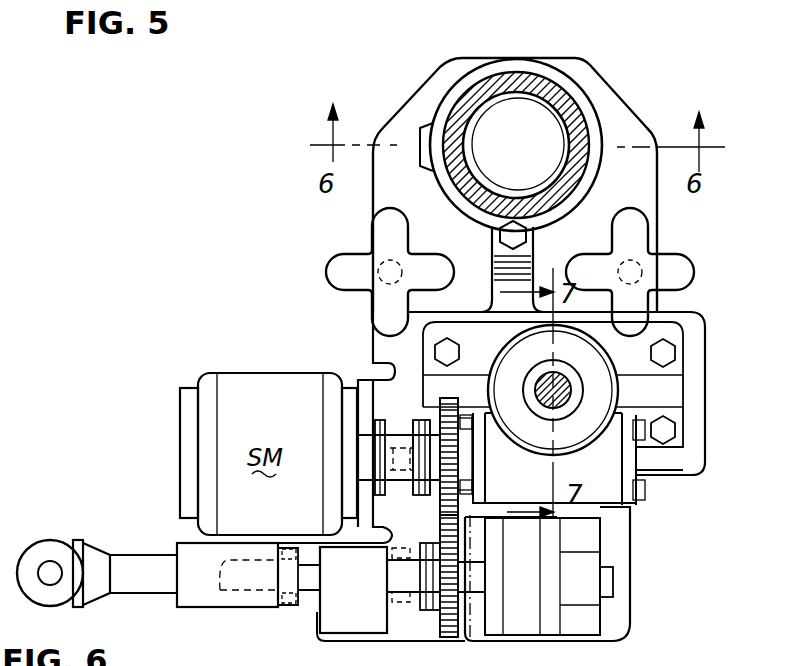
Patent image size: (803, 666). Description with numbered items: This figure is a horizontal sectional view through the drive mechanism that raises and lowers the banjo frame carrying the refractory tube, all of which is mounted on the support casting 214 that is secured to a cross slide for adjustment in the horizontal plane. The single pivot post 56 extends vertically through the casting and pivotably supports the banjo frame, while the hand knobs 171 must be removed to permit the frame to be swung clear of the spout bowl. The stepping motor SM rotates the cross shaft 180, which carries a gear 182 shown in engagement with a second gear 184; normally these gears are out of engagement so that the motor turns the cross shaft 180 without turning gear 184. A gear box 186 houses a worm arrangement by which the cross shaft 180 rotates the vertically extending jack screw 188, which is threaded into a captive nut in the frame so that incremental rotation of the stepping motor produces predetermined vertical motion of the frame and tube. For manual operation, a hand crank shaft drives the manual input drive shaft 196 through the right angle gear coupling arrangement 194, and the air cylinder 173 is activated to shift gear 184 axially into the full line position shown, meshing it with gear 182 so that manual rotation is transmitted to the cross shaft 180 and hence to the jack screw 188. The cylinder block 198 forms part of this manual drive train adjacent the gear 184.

The pivot post 56 is at (476, 100).
The support casting 214 is at (647, 64).
The hand knobs 171 is at (634, 240).
The cross shaft 180 is at (666, 462).
The gear 182 is at (438, 393).
The second gear 184 is at (448, 638).
The gear box 186 is at (612, 507).
The jack screw 188 is at (556, 380).
The air cylinder 173 is at (522, 618).
The manual input member 194 is at (52, 544).
The manual input drive shaft 196 is at (155, 513).
The cylinder block 198 is at (342, 598).